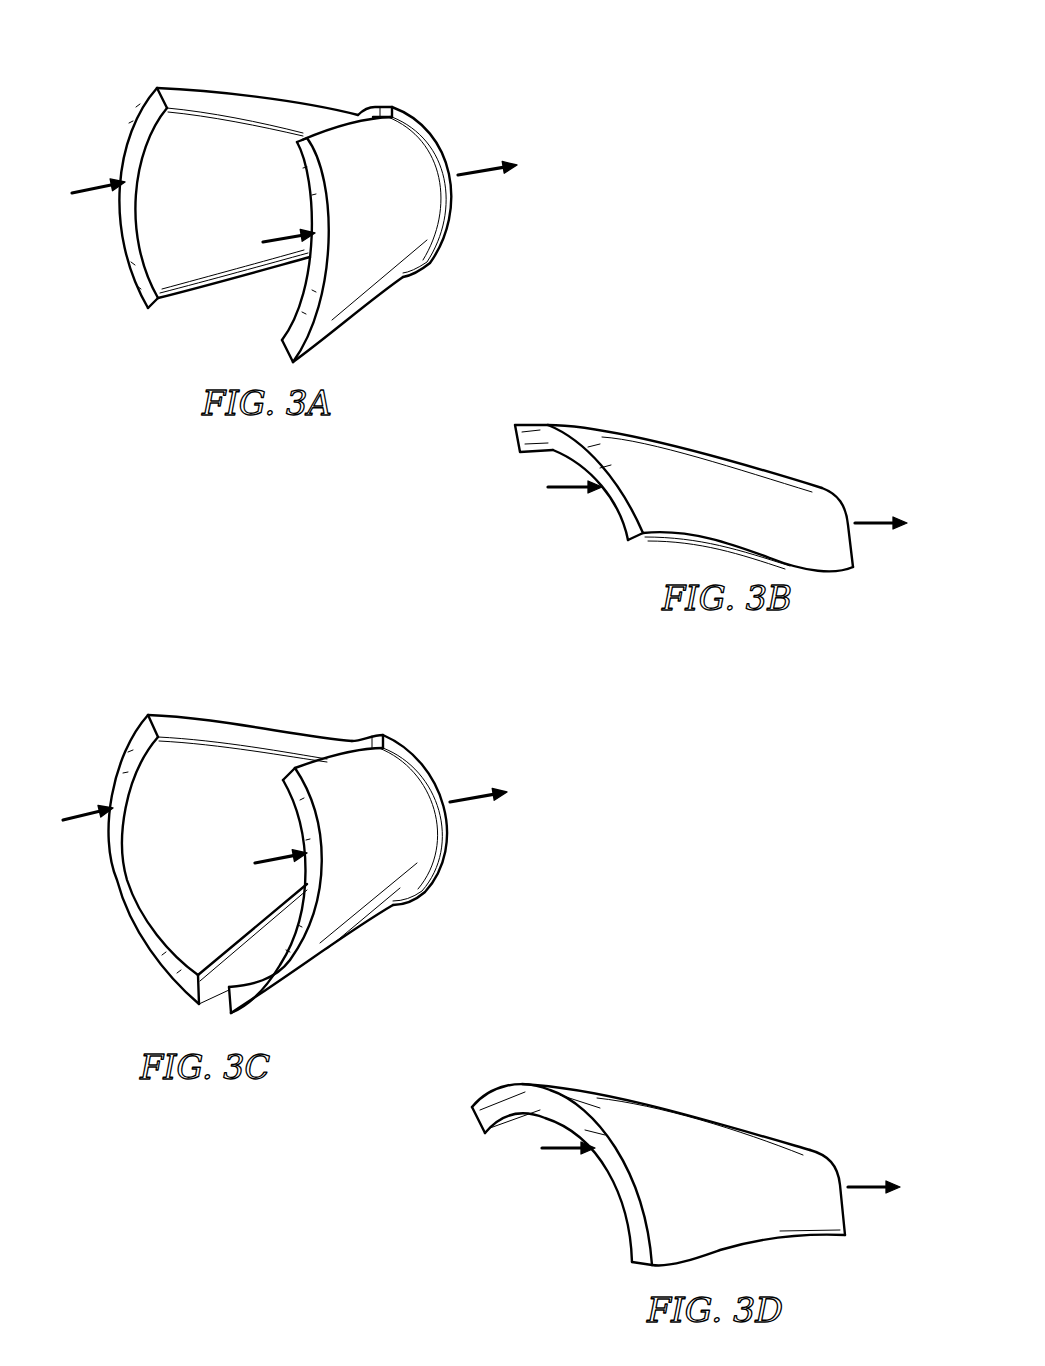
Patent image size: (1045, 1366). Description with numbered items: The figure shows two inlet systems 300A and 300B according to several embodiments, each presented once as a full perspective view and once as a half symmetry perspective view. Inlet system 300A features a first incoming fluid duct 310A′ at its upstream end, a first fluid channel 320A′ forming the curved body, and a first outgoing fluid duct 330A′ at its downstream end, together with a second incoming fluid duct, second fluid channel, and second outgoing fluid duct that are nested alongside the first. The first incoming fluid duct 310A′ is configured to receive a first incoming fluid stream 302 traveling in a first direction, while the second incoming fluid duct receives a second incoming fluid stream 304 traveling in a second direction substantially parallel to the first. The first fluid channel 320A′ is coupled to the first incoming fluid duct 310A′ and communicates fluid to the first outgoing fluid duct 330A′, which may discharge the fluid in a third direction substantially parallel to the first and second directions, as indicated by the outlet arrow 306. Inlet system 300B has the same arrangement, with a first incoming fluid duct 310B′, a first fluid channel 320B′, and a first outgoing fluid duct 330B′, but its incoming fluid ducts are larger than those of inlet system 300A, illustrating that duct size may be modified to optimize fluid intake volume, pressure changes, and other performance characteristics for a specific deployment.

In FIG. 3A, the inlet system 300A is at (237, 72).
In FIG. 3B, the inlet system 300A is at (685, 407).
In FIG. 3C, the inlet system 300B is at (258, 699).
In FIG. 3D, the inlet system 300B is at (678, 1072).
In FIG. 3A, the first incoming fluid stream 302 is at (93, 188).
In FIG. 3B, the first incoming fluid stream 302 is at (570, 492).
In FIG. 3C, the first incoming fluid stream 302 is at (80, 813).
In FIG. 3D, the first incoming fluid stream 302 is at (562, 1155).
In FIG. 3A, the second incoming fluid stream 304 is at (282, 235).
In FIG. 3C, the second incoming fluid stream 304 is at (272, 857).
In FIG. 3A, the outlet airflow 306 is at (480, 175).
In FIG. 3B, the outlet airflow 306 is at (875, 528).
In FIG. 3C, the outlet airflow 306 is at (473, 803).
In FIG. 3D, the outlet airflow 306 is at (868, 1190).
In FIG. 3A, the first incoming fluid duct 310A′ is at (133, 260).
In FIG. 3B, the first incoming fluid duct 310A′ is at (623, 530).
In FIG. 3A, the first fluid channel 320A′ is at (228, 192).
In FIG. 3B, the first fluid channel 320A′ is at (773, 522).
In FIG. 3A, the first outgoing fluid duct 330A′ is at (367, 103).
In FIG. 3B, the first outgoing fluid duct 330A′ is at (843, 510).
In FIG. 3C, the first incoming fluid duct 310B′ is at (123, 883).
In FIG. 3D, the first incoming fluid duct 310B′ is at (635, 1225).
In FIG. 3C, the first fluid channel 320B′ is at (216, 856).
In FIG. 3D, the first fluid channel 320B′ is at (766, 1195).
In FIG. 3C, the first outgoing fluid duct 330B′ is at (377, 732).
In FIG. 3D, the first outgoing fluid duct 330B′ is at (838, 1170).